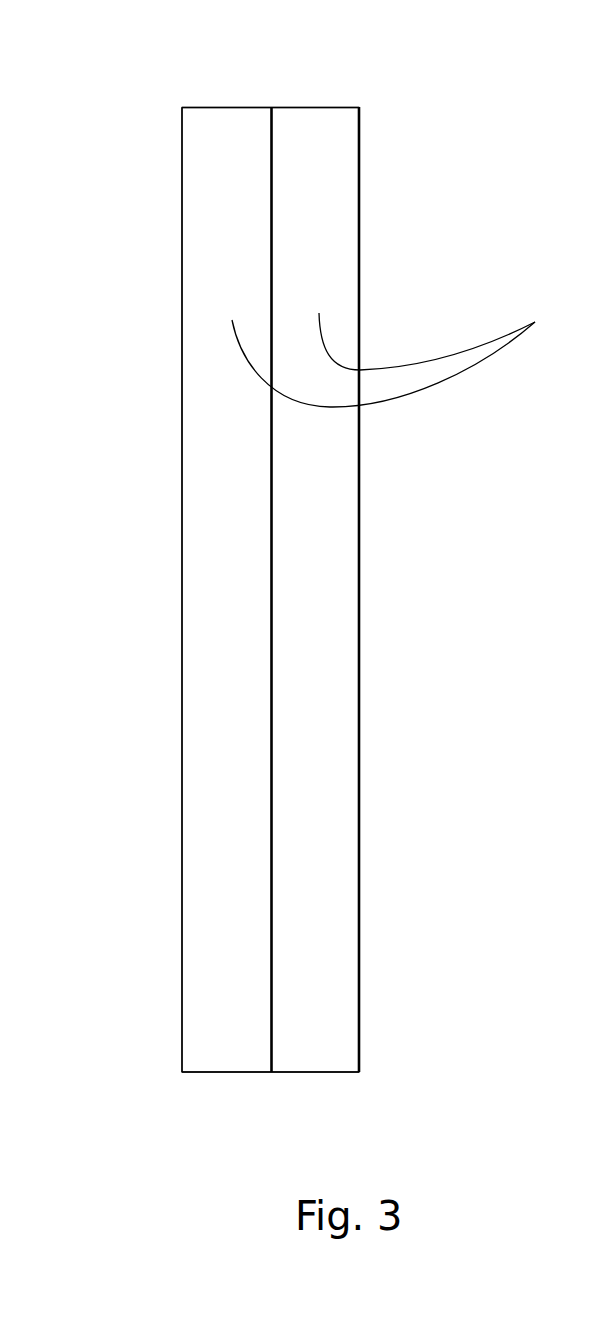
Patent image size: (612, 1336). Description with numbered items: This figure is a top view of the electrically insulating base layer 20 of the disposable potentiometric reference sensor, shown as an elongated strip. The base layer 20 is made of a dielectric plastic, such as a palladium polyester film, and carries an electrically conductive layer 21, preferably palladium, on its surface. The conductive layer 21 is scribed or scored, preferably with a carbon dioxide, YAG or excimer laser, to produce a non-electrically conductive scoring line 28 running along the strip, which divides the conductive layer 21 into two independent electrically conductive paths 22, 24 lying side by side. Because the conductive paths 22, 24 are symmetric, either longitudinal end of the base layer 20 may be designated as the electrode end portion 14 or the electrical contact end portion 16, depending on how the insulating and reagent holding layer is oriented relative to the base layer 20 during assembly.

The electrode end portion 14 is at (165, 1032).
The electrical contact end portion 16 is at (165, 191).
The electrically insulating base layer 20 is at (182, 575).
The electrically conductive layer 21 is at (397, 352).
The electrically conductive path 22 is at (228, 160).
The electrically conductive path 24 is at (303, 160).
The non-electrically conductive scoring line 28 is at (267, 693).